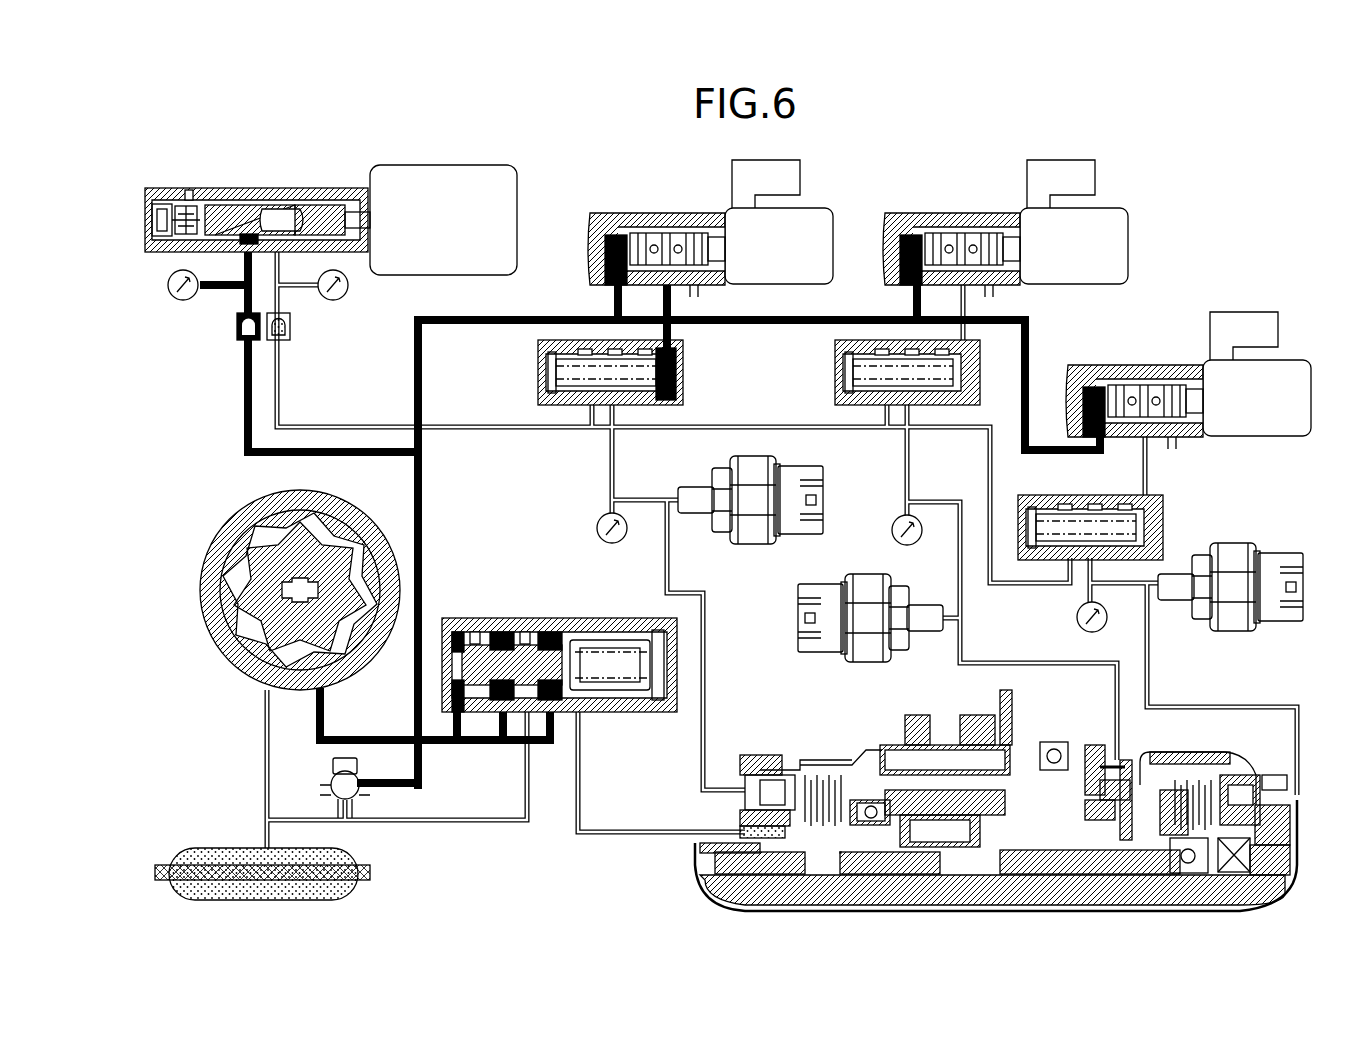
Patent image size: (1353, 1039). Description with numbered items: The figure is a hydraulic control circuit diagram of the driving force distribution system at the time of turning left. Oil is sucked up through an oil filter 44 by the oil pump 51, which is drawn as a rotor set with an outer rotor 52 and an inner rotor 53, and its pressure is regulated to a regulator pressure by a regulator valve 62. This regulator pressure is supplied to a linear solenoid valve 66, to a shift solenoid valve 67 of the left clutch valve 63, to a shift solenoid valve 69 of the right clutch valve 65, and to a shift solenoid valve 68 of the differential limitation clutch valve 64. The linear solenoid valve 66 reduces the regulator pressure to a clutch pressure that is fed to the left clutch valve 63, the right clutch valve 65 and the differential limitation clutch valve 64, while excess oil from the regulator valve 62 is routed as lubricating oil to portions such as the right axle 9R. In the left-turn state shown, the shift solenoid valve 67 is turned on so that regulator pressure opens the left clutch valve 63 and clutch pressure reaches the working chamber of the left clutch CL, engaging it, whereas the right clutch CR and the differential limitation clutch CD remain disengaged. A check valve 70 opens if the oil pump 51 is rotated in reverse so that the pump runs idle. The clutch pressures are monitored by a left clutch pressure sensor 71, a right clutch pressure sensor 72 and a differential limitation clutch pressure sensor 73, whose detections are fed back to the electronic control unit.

The oil filter 44 is at (212, 850).
The oil pump 51 is at (276, 563).
The outer rotor 52 is at (220, 560).
The inner rotor 53 is at (267, 542).
The regulator valve 62 is at (563, 617).
The left clutch valve 63 is at (540, 371).
The differential limitation clutch valve 64 is at (836, 371).
The right clutch valve 65 is at (1069, 494).
The linear solenoid valve 66 is at (284, 191).
The shift solenoid valve 67 is at (660, 214).
The shift solenoid valve 68 is at (952, 214).
The shift solenoid valve 69 is at (1148, 364).
The check valve 70 is at (332, 778).
The left clutch pressure sensor 71 is at (765, 480).
The right clutch pressure sensor 72 is at (1245, 555).
The differential limitation clutch pressure sensor 73 is at (825, 593).
The left clutch CL is at (812, 762).
The differential limitation clutch CD is at (1086, 786).
The right clutch CR is at (1214, 754).
The right axle 9R is at (840, 900).